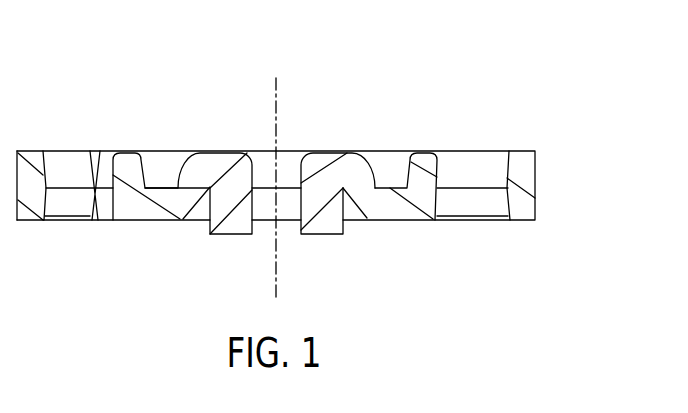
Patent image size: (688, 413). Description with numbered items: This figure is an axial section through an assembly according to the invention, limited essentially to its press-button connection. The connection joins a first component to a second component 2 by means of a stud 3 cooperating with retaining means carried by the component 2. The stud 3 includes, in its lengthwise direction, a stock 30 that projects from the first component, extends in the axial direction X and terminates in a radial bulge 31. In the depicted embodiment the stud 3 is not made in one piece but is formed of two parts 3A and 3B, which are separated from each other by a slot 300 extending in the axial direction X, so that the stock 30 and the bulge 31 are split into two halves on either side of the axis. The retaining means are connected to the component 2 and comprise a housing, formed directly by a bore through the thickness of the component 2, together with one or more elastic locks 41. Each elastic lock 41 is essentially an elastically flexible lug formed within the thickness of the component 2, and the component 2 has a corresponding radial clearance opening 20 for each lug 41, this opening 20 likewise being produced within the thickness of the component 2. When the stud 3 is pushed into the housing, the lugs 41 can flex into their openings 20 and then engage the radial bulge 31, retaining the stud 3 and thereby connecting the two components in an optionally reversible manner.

The second component 2 is at (526, 170).
The stud 3 is at (318, 43).
The first part of the stud 3A is at (233, 153).
The second part of the stud 3B is at (322, 153).
The radial clearance opening 20 is at (68, 208).
The stock 30 is at (330, 221).
The radial bulge 31 is at (205, 168).
The elastic lock 41 is at (126, 146).
The slot 300 is at (262, 208).
The axial direction X is at (275, 267).